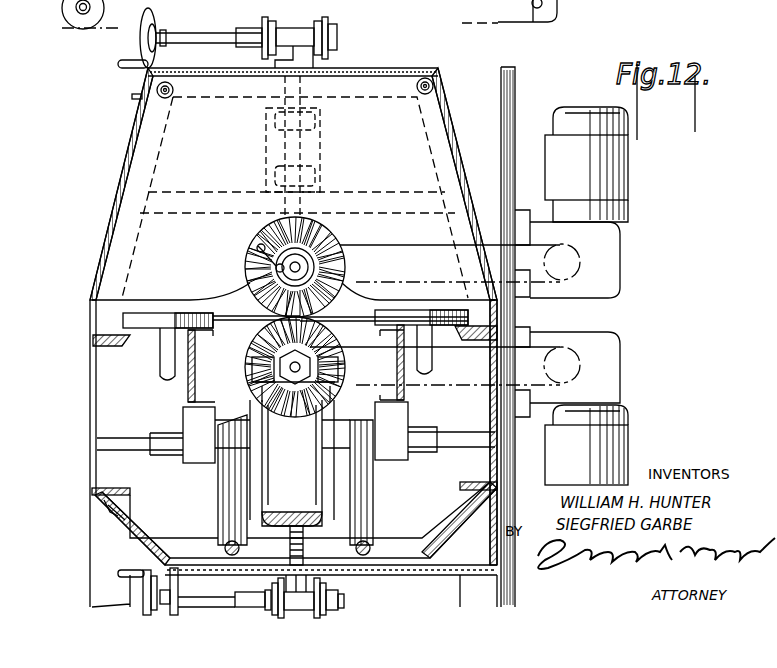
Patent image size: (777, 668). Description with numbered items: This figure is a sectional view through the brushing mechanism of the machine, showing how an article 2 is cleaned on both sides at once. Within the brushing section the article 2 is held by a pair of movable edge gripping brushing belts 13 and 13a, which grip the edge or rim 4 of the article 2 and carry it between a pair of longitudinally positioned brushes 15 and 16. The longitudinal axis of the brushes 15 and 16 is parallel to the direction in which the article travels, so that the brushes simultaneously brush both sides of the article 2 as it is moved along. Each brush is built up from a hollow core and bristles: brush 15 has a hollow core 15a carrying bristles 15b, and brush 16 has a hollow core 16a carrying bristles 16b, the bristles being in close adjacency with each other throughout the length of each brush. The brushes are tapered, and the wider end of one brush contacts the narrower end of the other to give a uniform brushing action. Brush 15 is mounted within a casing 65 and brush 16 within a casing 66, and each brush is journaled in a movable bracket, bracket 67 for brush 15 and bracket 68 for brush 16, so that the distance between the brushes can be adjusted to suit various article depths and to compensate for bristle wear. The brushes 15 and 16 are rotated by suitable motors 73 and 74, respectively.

The article 2 is at (352, 298).
The edge or rim 4 is at (376, 328).
The edge gripping brushing belt 13 is at (145, 326).
The edge gripping brushing belt 13a is at (447, 323).
The brush 15 is at (330, 222).
The hollow core 15a is at (332, 252).
The bristles 15b is at (244, 276).
The brush 16 is at (256, 363).
The hollow core 16a is at (262, 380).
The bristles 16b is at (252, 341).
The casing 65 is at (124, 166).
The casing 66 is at (115, 518).
The bracket 67 is at (322, 178).
The bracket 68 is at (345, 520).
The motor 73 is at (628, 172).
The motor 74 is at (630, 425).